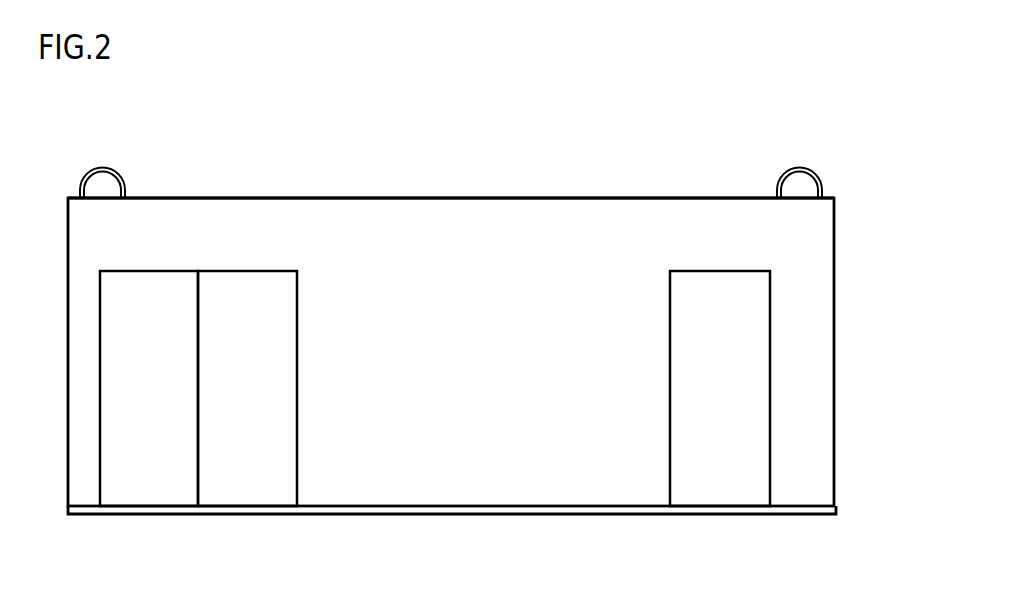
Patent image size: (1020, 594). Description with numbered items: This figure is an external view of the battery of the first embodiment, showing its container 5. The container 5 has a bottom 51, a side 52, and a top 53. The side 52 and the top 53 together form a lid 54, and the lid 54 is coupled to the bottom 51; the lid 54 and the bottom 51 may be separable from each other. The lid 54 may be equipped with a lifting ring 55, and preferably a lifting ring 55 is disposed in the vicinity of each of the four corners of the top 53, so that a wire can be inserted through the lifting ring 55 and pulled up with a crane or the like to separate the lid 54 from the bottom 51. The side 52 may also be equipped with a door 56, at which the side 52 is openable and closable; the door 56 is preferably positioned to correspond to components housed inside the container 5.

The container 5 is at (702, 116).
The bottom 51 is at (828, 510).
The side 52 is at (80, 238).
The top 53 is at (185, 197).
The lid 54 is at (202, 116).
The lifting ring 55 is at (105, 188).
The door 56 is at (247, 488).